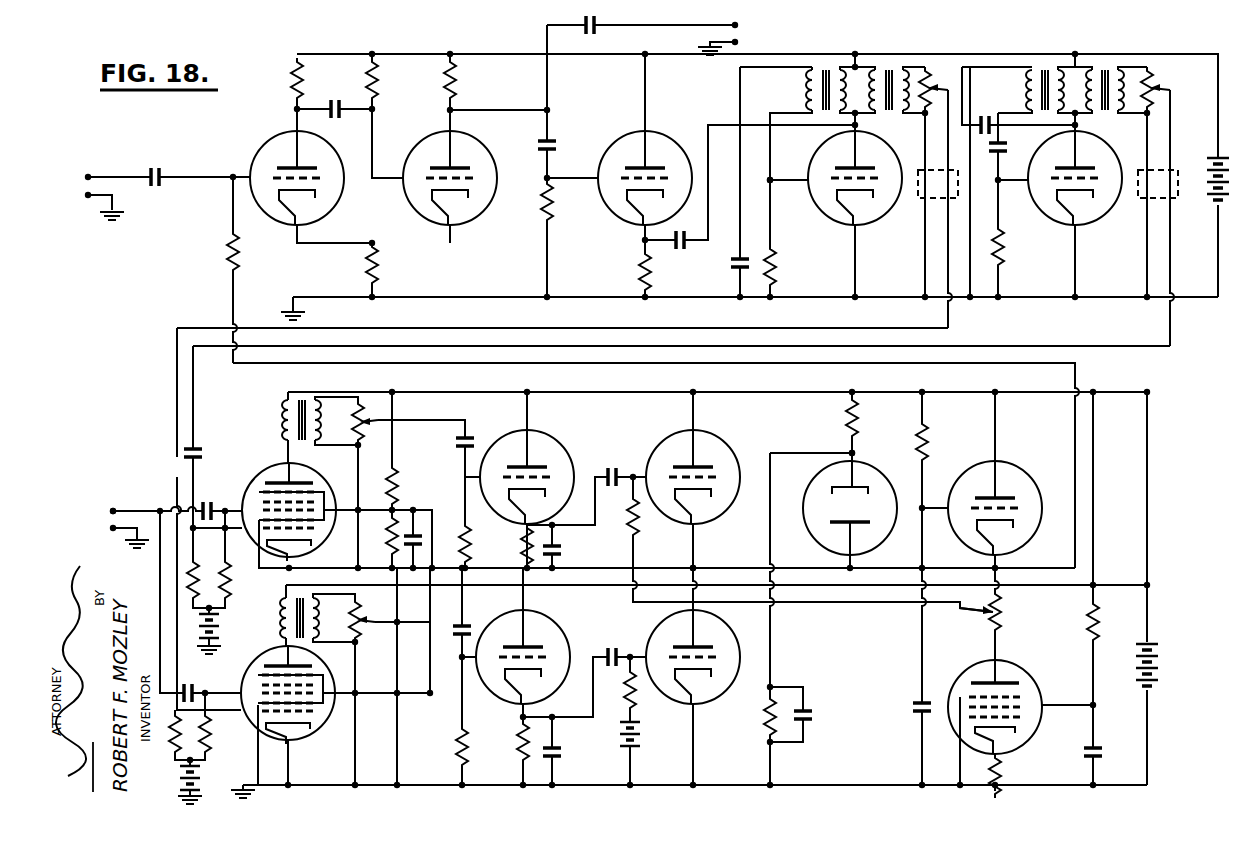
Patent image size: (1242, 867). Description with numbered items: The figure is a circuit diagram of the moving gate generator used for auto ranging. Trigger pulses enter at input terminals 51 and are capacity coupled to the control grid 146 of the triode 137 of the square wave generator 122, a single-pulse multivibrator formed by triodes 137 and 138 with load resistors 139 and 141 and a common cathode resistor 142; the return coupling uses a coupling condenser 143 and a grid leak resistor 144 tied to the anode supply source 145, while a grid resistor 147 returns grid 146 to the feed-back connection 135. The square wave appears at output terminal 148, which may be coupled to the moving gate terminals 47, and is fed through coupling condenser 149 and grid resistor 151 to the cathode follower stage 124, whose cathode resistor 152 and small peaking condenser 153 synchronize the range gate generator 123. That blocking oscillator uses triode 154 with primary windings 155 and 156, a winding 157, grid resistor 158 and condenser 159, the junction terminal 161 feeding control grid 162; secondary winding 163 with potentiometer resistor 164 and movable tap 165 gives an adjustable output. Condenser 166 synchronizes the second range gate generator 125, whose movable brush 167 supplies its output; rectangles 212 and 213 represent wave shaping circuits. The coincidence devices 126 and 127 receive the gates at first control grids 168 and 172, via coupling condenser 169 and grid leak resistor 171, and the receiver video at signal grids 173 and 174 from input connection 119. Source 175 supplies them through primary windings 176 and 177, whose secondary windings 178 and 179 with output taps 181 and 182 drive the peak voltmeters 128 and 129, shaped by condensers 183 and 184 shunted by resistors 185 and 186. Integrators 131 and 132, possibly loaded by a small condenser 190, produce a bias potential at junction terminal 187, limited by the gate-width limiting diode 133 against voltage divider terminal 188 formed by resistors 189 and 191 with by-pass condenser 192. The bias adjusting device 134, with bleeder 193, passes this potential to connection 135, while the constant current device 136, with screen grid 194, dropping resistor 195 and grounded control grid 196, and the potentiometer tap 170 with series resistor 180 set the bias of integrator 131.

The moving gate terminals 47 is at (673, 30).
The trigger-pulse input terminals 51 is at (86, 179).
The input connection 119 is at (113, 511).
The square wave generator 122 is at (428, 108).
The range gate generator 123 is at (889, 27).
The cathode follower stage 124 is at (647, 130).
The second range gate generator 125 is at (1089, 48).
The coincidence device 126 is at (302, 468).
The coincidence device 127 is at (311, 664).
The low time constant peak voltmeter 128 is at (538, 436).
The low time constant peak voltmeter 129 is at (544, 620).
The integrator 131 is at (705, 436).
The integrator 132 is at (720, 633).
The gate-width limiting diode 133 is at (863, 462).
The bias adjusting device 134 is at (997, 460).
The feed-back connection 135 is at (937, 364).
The constant current device 136 is at (969, 664).
The triode vacuum tube 137 is at (305, 135).
The triode vacuum tube 138 is at (473, 135).
The load resistor 139 is at (288, 77).
The load resistor 141 is at (453, 76).
The common cathode resistor 142 is at (375, 266).
The coupling condenser 143 is at (335, 100).
The grid leak resistor 144 is at (375, 76).
The source of anode voltage supply 145 is at (1210, 161).
The control grid 146 is at (325, 196).
The grid resistor 147 is at (218, 254).
The output terminal 148 is at (542, 108).
The coupling condenser 149 is at (549, 137).
The grid resistor 151 is at (553, 208).
The cathode resistor 152 is at (638, 266).
The peaking condenser 153 is at (682, 254).
The triode vacuum tube 154 is at (815, 152).
The transformer primary winding 155 is at (840, 68).
The transformer primary winding 156 is at (878, 54).
The transformer winding 157 is at (803, 92).
The grid resistor 158 is at (779, 264).
The condenser 159 is at (726, 275).
The junction terminal 161 is at (770, 180).
The control grid 162 is at (837, 205).
The secondary winding 163 is at (920, 112).
The potentiometer resistor 164 is at (947, 88).
The movable tap 165 is at (982, 110).
The condenser 166 is at (992, 154).
The movable brush 167 is at (1158, 85).
The first control grid 168 is at (307, 546).
The coupling condenser 169 is at (205, 448).
The potentiometer tap 170 is at (973, 610).
The grid leak resistor 171 is at (212, 566).
The first control grid 172 is at (308, 726).
The signal grid 173 is at (258, 493).
The signal grid 174 is at (253, 689).
The source of unidirectional voltage 175 is at (1134, 691).
The primary winding 176 is at (279, 404).
The primary winding 177 is at (278, 621).
The secondary winding 178 is at (323, 390).
The secondary winding 179 is at (284, 588).
The series resistor 180 is at (1001, 608).
The output tap 181 is at (374, 432).
The output tap 182 is at (356, 618).
The condenser 183 is at (564, 539).
The condenser 184 is at (555, 754).
The resistor 185 is at (523, 545).
The resistor 186 is at (519, 738).
The junction terminal 187 is at (693, 568).
The voltage divider terminal 188 is at (852, 452).
The resistor 189 is at (847, 420).
The condenser 190 is at (913, 713).
The resistor 191 is at (760, 716).
The by-pass condenser 192 is at (803, 723).
The bleeder resistor 193 is at (925, 440).
The screen grid 194 is at (1033, 695).
The dropping resistor 195 is at (1082, 630).
The control grid 196 is at (1024, 722).
The rectangle 212 is at (915, 210).
The rectangle 213 is at (1192, 218).